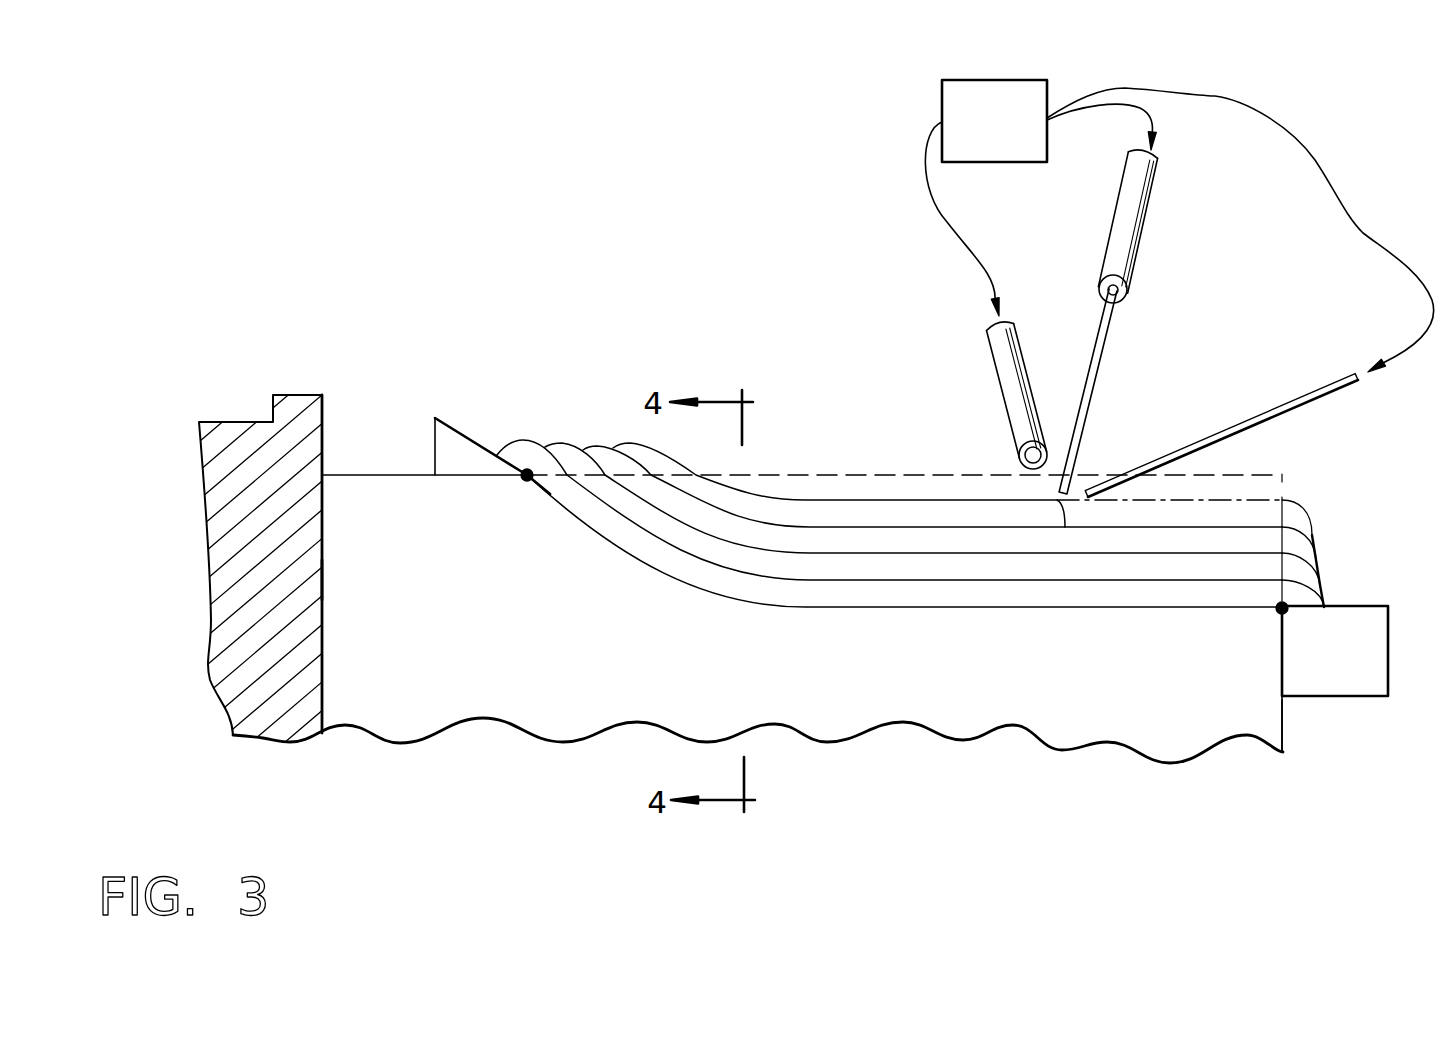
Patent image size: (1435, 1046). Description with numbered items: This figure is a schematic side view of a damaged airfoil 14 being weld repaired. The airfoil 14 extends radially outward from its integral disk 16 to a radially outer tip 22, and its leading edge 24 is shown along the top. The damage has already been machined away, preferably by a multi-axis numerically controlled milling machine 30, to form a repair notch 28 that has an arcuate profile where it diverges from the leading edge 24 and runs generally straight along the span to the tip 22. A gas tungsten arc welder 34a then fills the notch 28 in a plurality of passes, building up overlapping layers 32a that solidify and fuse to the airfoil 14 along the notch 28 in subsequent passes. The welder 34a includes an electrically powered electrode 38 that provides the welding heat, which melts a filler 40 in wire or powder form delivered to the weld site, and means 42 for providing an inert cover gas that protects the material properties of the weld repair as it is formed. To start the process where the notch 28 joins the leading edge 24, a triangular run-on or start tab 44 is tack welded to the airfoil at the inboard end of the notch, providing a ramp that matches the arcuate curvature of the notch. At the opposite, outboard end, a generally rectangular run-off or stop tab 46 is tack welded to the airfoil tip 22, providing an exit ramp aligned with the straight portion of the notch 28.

The airfoil 14 is at (469, 636).
The integral disk 16 is at (322, 402).
The radially outer tip 22 is at (1285, 733).
The leading edge 24 is at (346, 475).
The notch 28 is at (1085, 607).
The milling machine 30 is at (323, 578).
The layers 32a is at (798, 498).
The GTA welder 34a is at (997, 80).
The electrode 38 is at (1100, 366).
The filler 40 is at (1297, 410).
The means for providing an inert cover gas 42 is at (989, 348).
The start tab 44 is at (468, 437).
The stop tab 46 is at (1322, 669).